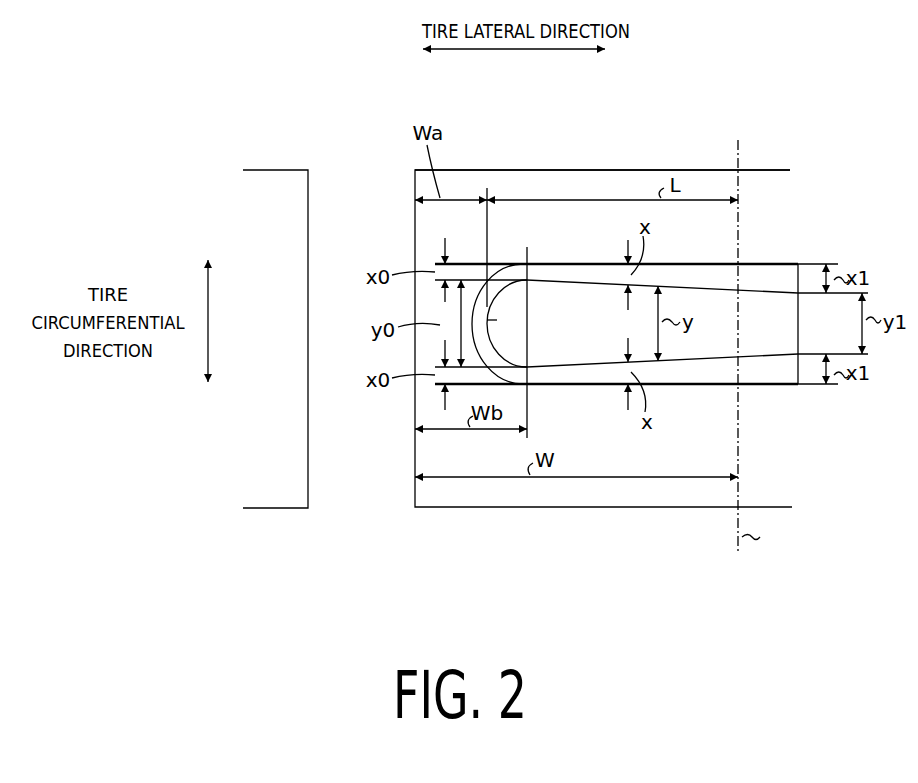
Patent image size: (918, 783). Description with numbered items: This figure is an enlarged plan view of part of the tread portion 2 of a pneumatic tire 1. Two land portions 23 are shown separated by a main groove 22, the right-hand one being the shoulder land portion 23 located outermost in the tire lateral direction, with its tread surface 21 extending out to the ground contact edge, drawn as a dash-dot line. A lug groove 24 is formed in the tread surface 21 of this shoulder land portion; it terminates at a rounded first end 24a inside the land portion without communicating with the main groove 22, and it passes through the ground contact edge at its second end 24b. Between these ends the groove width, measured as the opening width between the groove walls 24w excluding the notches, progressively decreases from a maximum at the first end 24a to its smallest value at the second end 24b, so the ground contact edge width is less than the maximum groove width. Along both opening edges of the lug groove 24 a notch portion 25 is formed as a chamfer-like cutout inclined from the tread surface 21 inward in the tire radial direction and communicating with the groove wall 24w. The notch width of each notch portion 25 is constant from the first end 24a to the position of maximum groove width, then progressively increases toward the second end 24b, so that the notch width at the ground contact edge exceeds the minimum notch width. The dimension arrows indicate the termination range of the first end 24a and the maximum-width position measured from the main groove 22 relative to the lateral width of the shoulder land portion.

The pneumatic tire 1 is at (752, 95).
The tread portion 2 is at (478, 185).
The tread surface 21 is at (562, 192).
The main groove 22 is at (358, 485).
The land portion 23 is at (623, 190).
The lug groove 24 is at (601, 352).
The first end 24a is at (521, 300).
The second end 24b is at (800, 322).
The groove wall 24w is at (596, 288).
The notch portion 25 is at (680, 272).